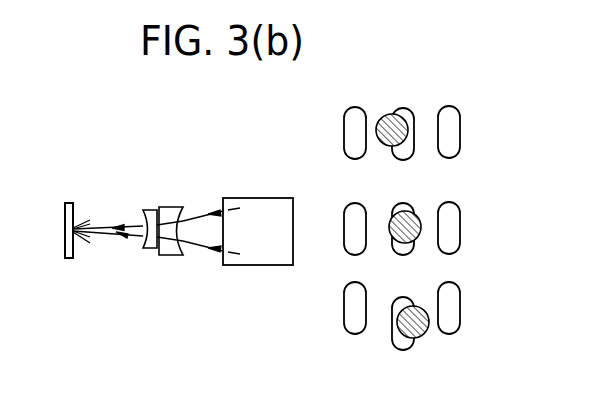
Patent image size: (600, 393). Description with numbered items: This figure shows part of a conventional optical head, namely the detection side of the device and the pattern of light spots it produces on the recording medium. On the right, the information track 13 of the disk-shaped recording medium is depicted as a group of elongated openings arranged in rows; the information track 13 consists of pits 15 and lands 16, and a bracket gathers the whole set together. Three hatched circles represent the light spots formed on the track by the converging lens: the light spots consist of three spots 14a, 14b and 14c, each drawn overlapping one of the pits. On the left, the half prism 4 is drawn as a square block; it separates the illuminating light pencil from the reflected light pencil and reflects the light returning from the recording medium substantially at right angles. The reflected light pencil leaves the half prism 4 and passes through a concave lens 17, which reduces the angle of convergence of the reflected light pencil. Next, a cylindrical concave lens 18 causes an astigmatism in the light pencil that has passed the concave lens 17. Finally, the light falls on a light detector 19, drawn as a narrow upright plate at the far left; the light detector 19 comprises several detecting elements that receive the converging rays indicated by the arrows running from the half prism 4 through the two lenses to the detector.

The half prism 4 is at (258, 198).
The information track 13 is at (411, 203).
The light spot 14a is at (416, 215).
The light spot 14b is at (401, 114).
The light spot 14c is at (420, 337).
The pit 15 is at (458, 111).
The land 16 is at (448, 161).
The concave lens 17 is at (171, 207).
The cylindrical concave lens 18 is at (150, 210).
The light detector 19 is at (70, 203).